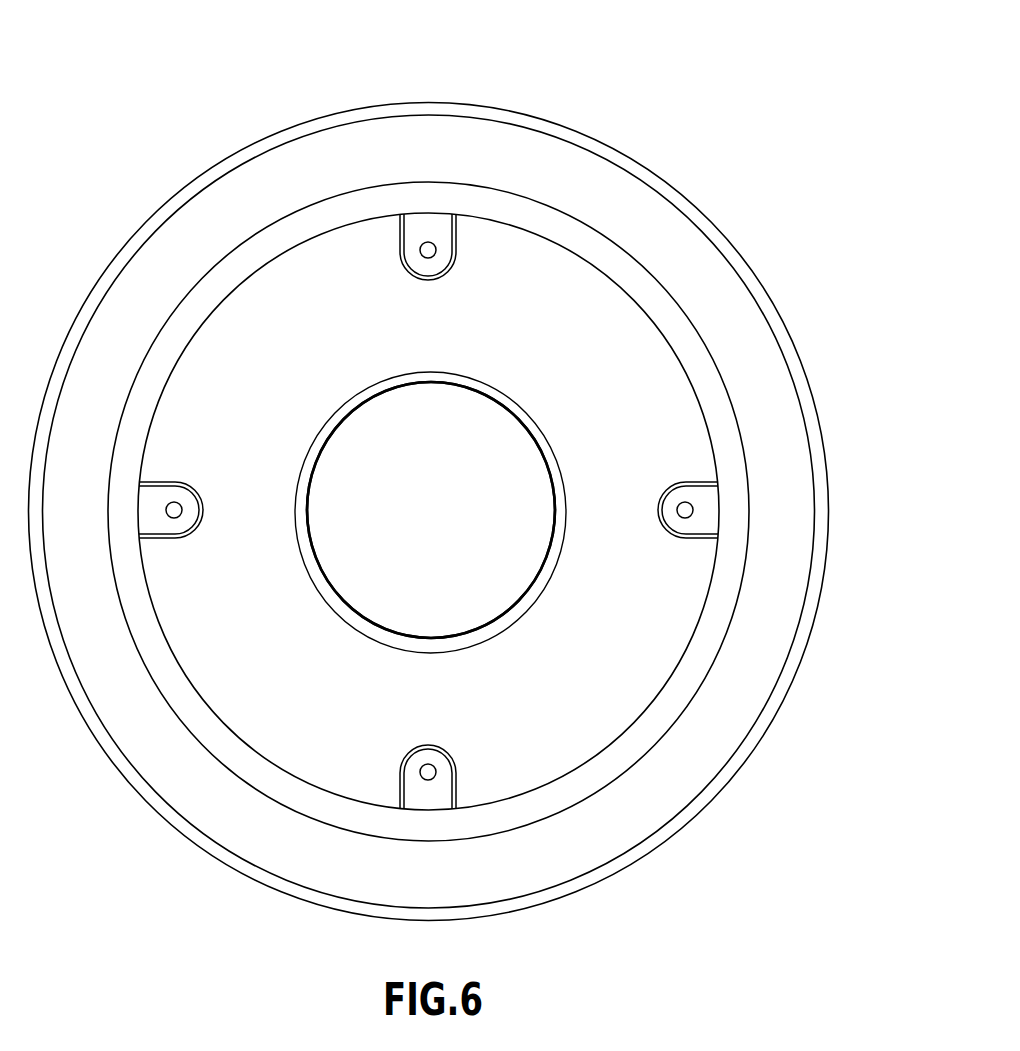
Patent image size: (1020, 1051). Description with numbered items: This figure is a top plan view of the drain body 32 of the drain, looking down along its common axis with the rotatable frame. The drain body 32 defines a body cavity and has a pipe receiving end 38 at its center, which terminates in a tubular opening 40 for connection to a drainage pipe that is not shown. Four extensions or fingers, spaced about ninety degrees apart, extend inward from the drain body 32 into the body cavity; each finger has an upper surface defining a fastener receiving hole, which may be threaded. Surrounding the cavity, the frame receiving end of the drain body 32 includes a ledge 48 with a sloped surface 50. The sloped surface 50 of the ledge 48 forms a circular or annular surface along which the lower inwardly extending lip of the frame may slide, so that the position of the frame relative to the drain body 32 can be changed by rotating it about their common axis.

The drain body 32 is at (626, 84).
The pipe receiving end 38 is at (307, 494).
The tubular opening 40 is at (414, 516).
The ledge 48 is at (720, 795).
The sloped surface 50 is at (712, 285).